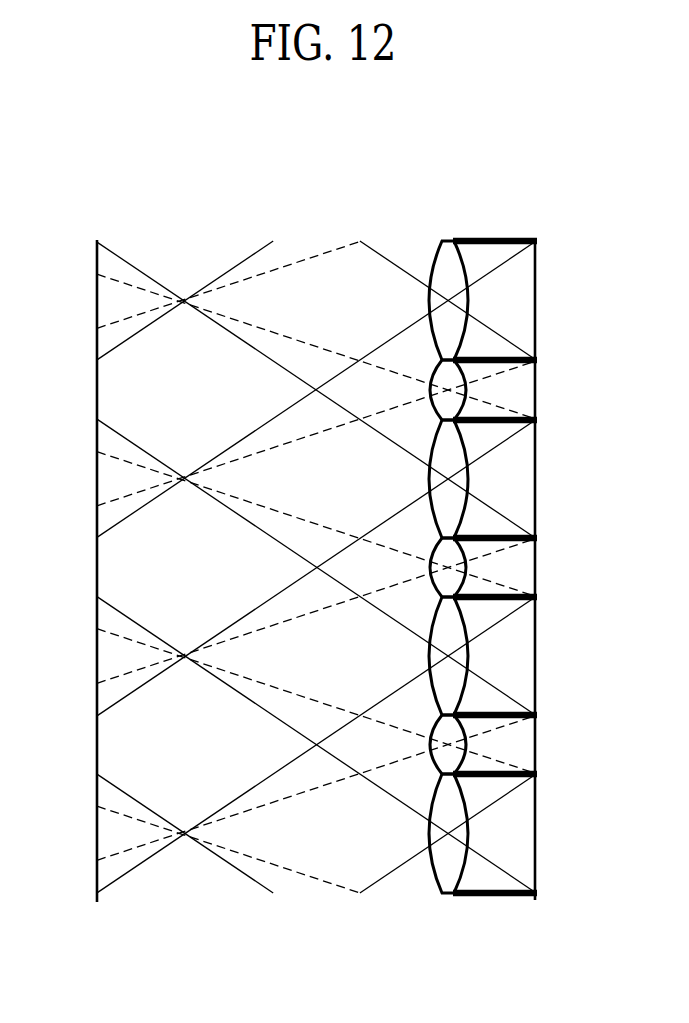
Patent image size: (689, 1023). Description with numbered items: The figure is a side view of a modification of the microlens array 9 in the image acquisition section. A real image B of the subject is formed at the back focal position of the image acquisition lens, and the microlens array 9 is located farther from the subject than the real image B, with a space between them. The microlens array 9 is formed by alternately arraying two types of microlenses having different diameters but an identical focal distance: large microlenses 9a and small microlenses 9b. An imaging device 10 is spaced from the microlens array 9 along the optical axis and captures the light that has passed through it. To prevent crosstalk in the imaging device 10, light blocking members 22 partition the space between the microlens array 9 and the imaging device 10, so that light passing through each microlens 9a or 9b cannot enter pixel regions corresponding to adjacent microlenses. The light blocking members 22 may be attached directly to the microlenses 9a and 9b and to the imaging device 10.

The microlens array 9 is at (415, 513).
The large microlens 9a is at (438, 249).
The small microlens 9b is at (437, 368).
The light blocking member 22 is at (495, 238).
The imaging device 10 is at (533, 321).
The real image B is at (96, 300).